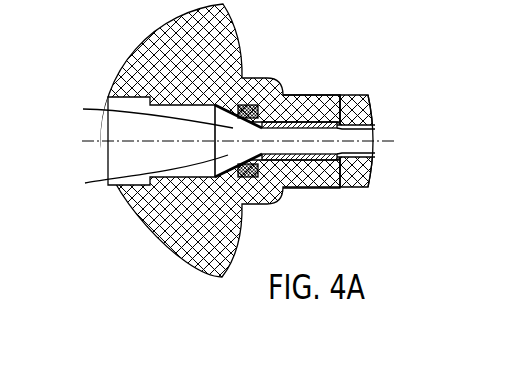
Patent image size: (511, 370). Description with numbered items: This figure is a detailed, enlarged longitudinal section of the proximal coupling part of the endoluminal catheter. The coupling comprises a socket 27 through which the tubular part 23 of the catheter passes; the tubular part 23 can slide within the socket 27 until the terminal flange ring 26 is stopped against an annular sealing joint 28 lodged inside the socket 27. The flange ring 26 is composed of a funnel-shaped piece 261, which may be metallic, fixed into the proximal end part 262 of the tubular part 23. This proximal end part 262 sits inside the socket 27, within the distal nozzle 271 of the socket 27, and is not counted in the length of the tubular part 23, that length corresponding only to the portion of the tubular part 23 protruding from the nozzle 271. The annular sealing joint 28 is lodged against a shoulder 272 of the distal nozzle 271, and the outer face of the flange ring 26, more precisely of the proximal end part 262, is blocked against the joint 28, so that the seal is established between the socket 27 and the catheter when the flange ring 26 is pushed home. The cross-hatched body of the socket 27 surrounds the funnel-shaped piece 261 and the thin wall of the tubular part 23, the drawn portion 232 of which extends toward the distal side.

The socket 27 is at (217, 25).
The nozzle 271 is at (375, 172).
The shoulder 272 is at (277, 98).
The annular sealing joint 28 is at (252, 100).
The terminal flange ring 26 is at (231, 149).
The funnel-shaped piece 261 is at (145, 112).
The proximal end part 262 is at (287, 120).
The tubular part 23 is at (356, 96).
The ferrule inner tube 232 is at (316, 160).